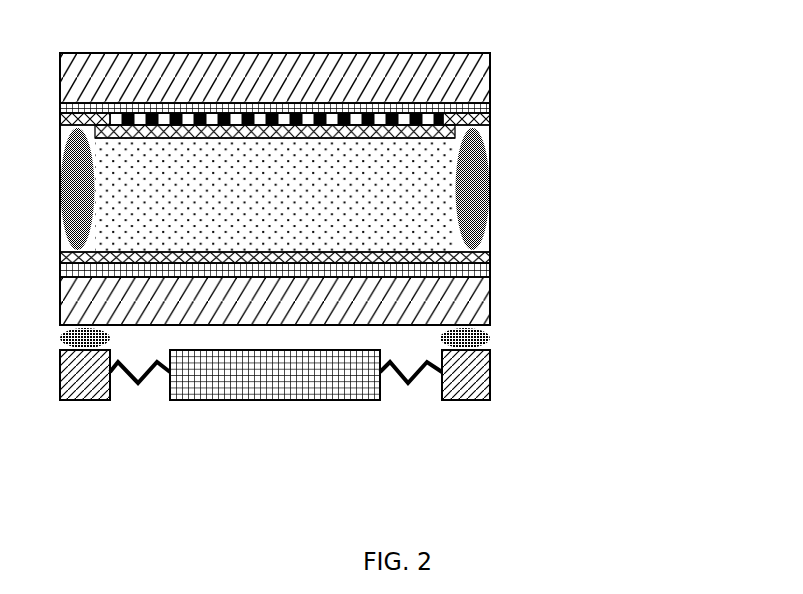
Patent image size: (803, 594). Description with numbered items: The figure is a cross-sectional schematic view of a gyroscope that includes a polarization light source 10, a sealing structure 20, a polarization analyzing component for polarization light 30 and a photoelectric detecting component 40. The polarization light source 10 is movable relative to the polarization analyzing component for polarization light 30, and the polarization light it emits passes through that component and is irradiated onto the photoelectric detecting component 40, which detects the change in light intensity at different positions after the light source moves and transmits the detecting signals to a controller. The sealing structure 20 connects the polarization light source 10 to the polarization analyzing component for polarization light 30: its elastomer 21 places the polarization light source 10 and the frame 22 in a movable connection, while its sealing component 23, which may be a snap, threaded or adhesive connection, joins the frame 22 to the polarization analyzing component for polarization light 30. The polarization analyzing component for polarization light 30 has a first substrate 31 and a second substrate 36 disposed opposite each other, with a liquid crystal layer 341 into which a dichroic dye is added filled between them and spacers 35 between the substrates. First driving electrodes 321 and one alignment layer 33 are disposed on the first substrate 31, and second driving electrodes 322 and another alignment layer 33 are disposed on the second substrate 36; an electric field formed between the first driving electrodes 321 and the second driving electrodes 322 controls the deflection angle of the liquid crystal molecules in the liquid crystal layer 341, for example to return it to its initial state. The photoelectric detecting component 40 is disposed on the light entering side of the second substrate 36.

The polarization light source 10 is at (393, 421).
The sealing structure 20 is at (387, 393).
The elastomer 21 is at (363, 410).
The frame 22 is at (338, 386).
The sealing component 23 is at (338, 356).
The polarization analyzing component for polarization light 30 is at (387, 185).
The first substrate 31 is at (338, 312).
The first driving electrodes 321 is at (345, 287).
The second driving electrodes 322 is at (490, 110).
The alignment layers 33 is at (490, 258).
The liquid crystal layer into which a dichroic dye is added 341 is at (362, 195).
The spacers 35 is at (468, 183).
The second substrate 36 is at (490, 80).
The photoelectric detecting component 40 is at (338, 68).